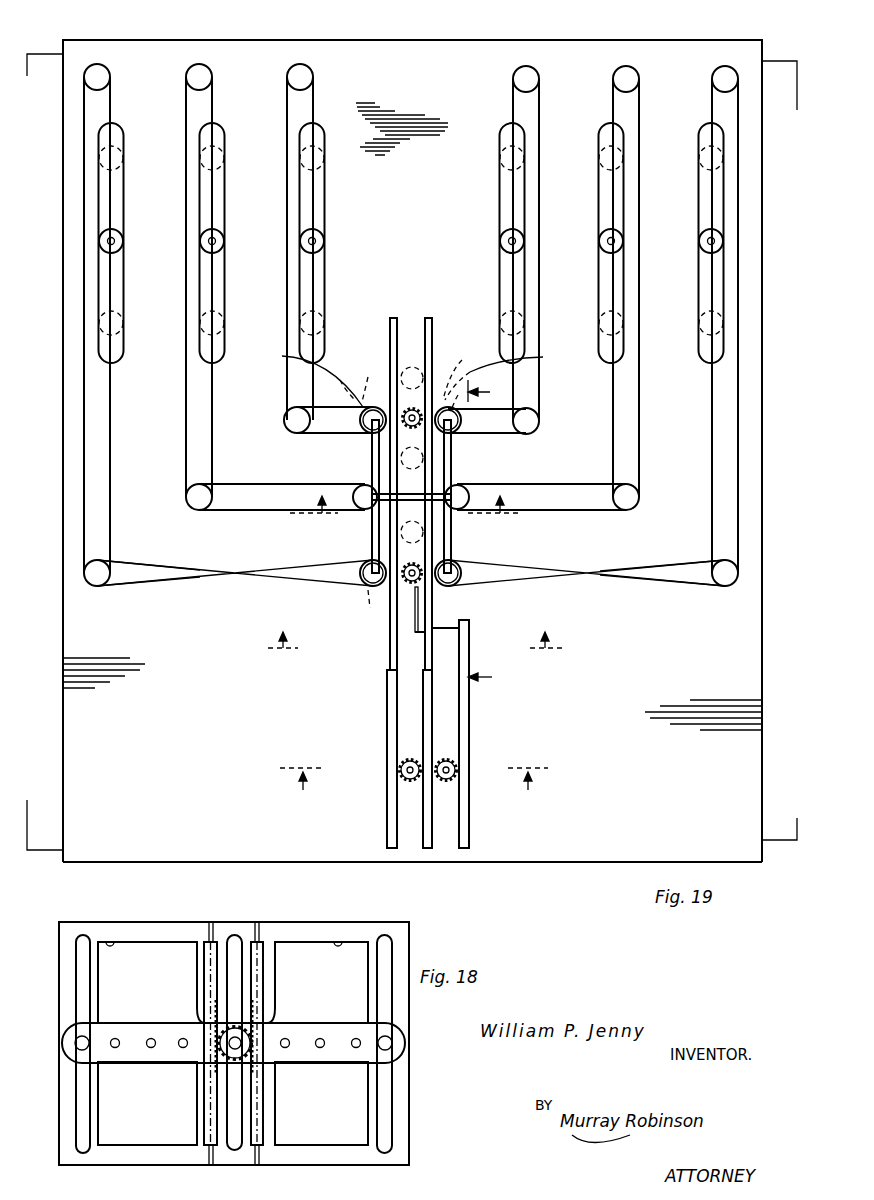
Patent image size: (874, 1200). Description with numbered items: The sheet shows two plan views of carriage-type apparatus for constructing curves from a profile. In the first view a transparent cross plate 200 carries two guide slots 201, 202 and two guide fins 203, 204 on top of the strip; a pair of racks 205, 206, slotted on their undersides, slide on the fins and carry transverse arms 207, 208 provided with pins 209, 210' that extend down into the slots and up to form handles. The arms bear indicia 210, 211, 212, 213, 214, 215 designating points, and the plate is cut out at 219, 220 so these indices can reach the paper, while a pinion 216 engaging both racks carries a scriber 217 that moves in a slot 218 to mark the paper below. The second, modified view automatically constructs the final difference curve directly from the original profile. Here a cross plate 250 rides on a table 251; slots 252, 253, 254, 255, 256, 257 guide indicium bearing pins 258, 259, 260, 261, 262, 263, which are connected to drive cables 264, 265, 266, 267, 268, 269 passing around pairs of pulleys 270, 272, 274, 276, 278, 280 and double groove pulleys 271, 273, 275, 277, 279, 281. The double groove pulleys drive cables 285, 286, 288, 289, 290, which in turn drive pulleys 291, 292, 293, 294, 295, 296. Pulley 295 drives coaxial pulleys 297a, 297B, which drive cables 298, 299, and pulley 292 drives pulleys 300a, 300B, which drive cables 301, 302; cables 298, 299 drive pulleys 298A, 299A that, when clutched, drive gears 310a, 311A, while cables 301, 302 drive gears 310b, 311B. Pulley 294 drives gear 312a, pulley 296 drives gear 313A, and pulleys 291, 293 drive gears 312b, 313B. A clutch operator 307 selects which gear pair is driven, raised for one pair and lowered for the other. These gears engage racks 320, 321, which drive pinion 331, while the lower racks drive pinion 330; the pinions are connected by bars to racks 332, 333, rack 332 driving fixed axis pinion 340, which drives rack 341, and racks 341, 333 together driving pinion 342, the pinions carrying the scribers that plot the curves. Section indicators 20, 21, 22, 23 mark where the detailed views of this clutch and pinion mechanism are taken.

In FIG. 19, the cross plate 250 is at (410, 40).
In FIG. 19, the table 251 is at (755, 836).
In FIG. 19, the pulley 270 is at (106, 70).
In FIG. 19, the pulley 272 is at (206, 72).
In FIG. 19, the pulley 274 is at (306, 72).
In FIG. 19, the pulley 276 is at (513, 76).
In FIG. 19, the pulley 278 is at (613, 76).
In FIG. 19, the pulley 280 is at (712, 76).
In FIG. 19, the slot 252 is at (101, 140).
In FIG. 19, the slot 253 is at (201, 136).
In FIG. 19, the slot 254 is at (302, 128).
In FIG. 19, the slot 255 is at (502, 130).
In FIG. 19, the slot 256 is at (605, 130).
In FIG. 19, the slot 257 is at (705, 133).
In FIG. 19, the drive cable 264 is at (113, 186).
In FIG. 19, the drive cable 265 is at (213, 193).
In FIG. 19, the drive cable 266 is at (314, 186).
In FIG. 19, the drive cable 267 is at (512, 193).
In FIG. 19, the drive cable 268 is at (609, 195).
In FIG. 19, the drive cable 269 is at (706, 195).
In FIG. 19, the indicium bearing pin 258 is at (106, 240).
In FIG. 19, the indicium bearing pin 259 is at (210, 243).
In FIG. 19, the indicium bearing pin 260 is at (310, 243).
In FIG. 19, the indicium bearing pin 261 is at (500, 242).
In FIG. 19, the indicium bearing pin 262 is at (599, 243).
In FIG. 19, the indicium bearing pin 263 is at (699, 243).
In FIG. 19, the double groove pulley 271 is at (84, 571).
In FIG. 19, the double groove pulley 273 is at (186, 496).
In FIG. 19, the double groove pulley 275 is at (285, 421).
In FIG. 19, the double groove pulley 277 is at (538, 418).
In FIG. 19, the double groove pulley 279 is at (629, 511).
In FIG. 19, the double groove pulley 281 is at (733, 595).
In FIG. 19, the cable 285 is at (153, 580).
In FIG. 19, the cable 286 is at (233, 512).
In FIG. 19, the cable 288 is at (675, 588).
In FIG. 19, the cable 289 is at (550, 514).
In FIG. 19, the cable 290 is at (507, 436).
In FIG. 19, the rack 320 is at (390, 327).
In FIG. 19, the rack 321 is at (432, 330).
In FIG. 19, the rack 333 is at (388, 710).
In FIG. 19, the rack 341 is at (430, 736).
In FIG. 19, the rack 332 is at (468, 712).
In FIG. 19, the pulley 298A is at (472, 630).
In FIG. 19, the pinion 330 is at (413, 590).
In FIG. 19, the pulley 293 is at (366, 400).
In FIG. 19, the cable 302 is at (370, 442).
In FIG. 19, the cable 299 is at (460, 457).
In FIG. 19, the cable 298 is at (468, 543).
In FIG. 19, the clutch operator 307 is at (407, 531).
In FIG. 19, the pulley 292 is at (363, 488).
In FIG. 19, the pulley 300B is at (316, 472).
In FIG. 19, the pulley 300a is at (332, 485).
In FIG. 19, the coaxial pulley 297a is at (460, 488).
In FIG. 19, the coaxial pulley 297B is at (519, 477).
In FIG. 19, the pulley 295 is at (533, 488).
In FIG. 19, the cable 301 is at (361, 562).
In FIG. 19, the pulley 296 is at (456, 592).
In FIG. 19, the pinion 331 is at (405, 412).
In FIG. 19, the pulley 294 is at (443, 454).
In FIG. 19, the pulley 299A is at (463, 371).
In FIG. 19, the gear 312a is at (511, 375).
In FIG. 19, the gear 311A is at (515, 388).
In FIG. 19, the gear 312b is at (304, 377).
In FIG. 19, the gear 311B is at (297, 382).
In FIG. 19, the gear 310b is at (221, 592).
In FIG. 19, the gear 313B is at (224, 590).
In FIG. 19, the pulley 291 is at (357, 607).
In FIG. 19, the gear 310a is at (500, 572).
In FIG. 19, the gear 313A is at (662, 563).
In FIG. 19, the fixed axis pinion 340 is at (457, 765).
In FIG. 19, the pinion 342 is at (398, 770).
In FIG. 19, the section line 20 is at (498, 536).
In FIG. 19, the section line 21 is at (406, 520).
In FIG. 19, the section line 22 is at (416, 623).
In FIG. 19, the section line 23 is at (415, 795).
In FIG. 18, the transparent cross plate 200 is at (328, 925).
In FIG. 18, the guide slot 201 is at (78, 950).
In FIG. 18, the guide slot 202 is at (393, 952).
In FIG. 18, the guide fin 203 is at (203, 930).
In FIG. 18, the guide fin 204 is at (263, 930).
In FIG. 18, the rack 205 is at (202, 960).
In FIG. 18, the rack 206 is at (268, 963).
In FIG. 18, the transverse arm 207 is at (127, 1058).
In FIG. 18, the transverse arm 208 is at (345, 1067).
In FIG. 18, the cut out 219 is at (113, 942).
In FIG. 18, the cut out 220 is at (338, 945).
In FIG. 18, the slot 218 is at (235, 936).
In FIG. 18, the pinion 216 is at (237, 1063).
In FIG. 18, the scriber 217 is at (218, 1045).
In FIG. 18, the pin 209 is at (80, 1036).
In FIG. 18, the pin 210' is at (421, 1051).
In FIG. 18, the indicium 210 is at (125, 1006).
In FIG. 18, the indicium 211 is at (150, 1038).
In FIG. 18, the indicium 212 is at (183, 1038).
In FIG. 18, the indicium 213 is at (285, 1038).
In FIG. 18, the indicium 214 is at (320, 1038).
In FIG. 18, the indicium 215 is at (357, 1038).